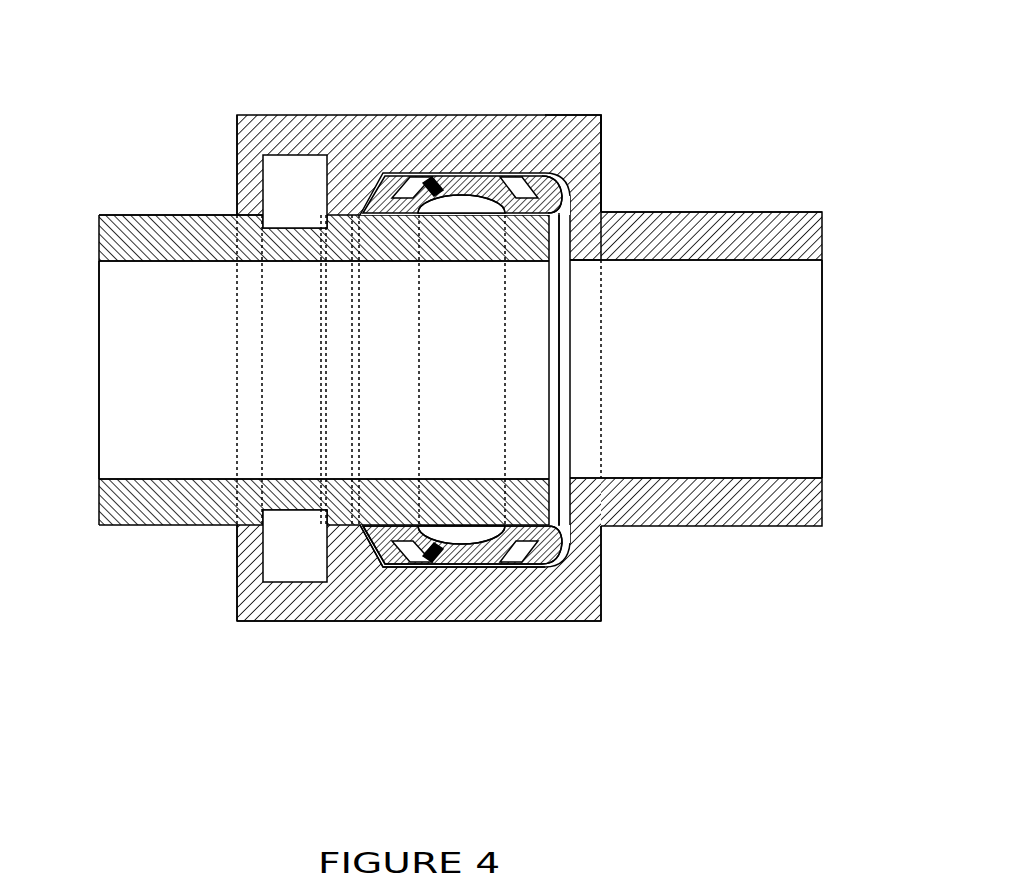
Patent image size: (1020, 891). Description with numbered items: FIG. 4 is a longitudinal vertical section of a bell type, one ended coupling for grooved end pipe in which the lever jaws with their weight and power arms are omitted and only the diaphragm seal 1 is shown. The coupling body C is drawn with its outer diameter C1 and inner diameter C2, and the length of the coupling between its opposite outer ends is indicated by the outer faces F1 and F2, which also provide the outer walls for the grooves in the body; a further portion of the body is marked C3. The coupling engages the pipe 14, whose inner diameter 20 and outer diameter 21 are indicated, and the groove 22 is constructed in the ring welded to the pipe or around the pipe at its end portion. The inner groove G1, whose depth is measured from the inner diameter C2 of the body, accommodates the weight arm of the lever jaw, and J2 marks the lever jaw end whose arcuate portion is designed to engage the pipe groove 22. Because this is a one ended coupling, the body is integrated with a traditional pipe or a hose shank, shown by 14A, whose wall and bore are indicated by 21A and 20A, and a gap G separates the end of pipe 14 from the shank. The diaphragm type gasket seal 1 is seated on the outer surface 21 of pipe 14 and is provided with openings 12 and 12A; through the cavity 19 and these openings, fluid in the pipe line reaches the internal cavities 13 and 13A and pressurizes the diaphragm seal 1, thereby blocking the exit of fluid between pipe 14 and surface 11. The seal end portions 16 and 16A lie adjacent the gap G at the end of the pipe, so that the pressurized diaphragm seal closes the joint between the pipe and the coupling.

The diaphragm seal 1 is at (474, 545).
The seal contact surface 11 is at (418, 215).
The seal opening 12 is at (447, 198).
The seal opening 12A is at (483, 530).
The internal cavity 13 is at (440, 172).
The internal cavity 13A is at (500, 172).
The pipe 14 is at (188, 247).
The pipe or hose shank 14A is at (747, 262).
The seal end face 16 is at (552, 225).
The seal end face 16A is at (560, 280).
The cavity 19 is at (480, 205).
The inner diameter of pipe 20 is at (125, 480).
The pipe bore 20A is at (705, 478).
The outer diameter of pipe 21 is at (123, 215).
The second pipe 21A is at (795, 212).
The pipe groove 22 is at (293, 228).
The coupling body C is at (603, 608).
The outer diameter of coupling body C1 is at (408, 621).
The inner diameter of coupling body C2 is at (395, 565).
The coupling end portion C3 is at (530, 172).
The outer face of coupling F1 is at (235, 188).
The outer face of coupling F2 is at (602, 163).
The gap G is at (558, 400).
The inner groove G1 is at (285, 188).
The lever jaw end J2 is at (247, 215).